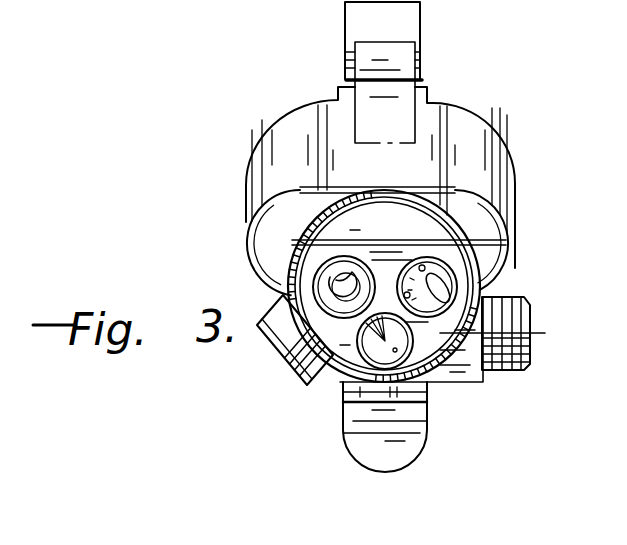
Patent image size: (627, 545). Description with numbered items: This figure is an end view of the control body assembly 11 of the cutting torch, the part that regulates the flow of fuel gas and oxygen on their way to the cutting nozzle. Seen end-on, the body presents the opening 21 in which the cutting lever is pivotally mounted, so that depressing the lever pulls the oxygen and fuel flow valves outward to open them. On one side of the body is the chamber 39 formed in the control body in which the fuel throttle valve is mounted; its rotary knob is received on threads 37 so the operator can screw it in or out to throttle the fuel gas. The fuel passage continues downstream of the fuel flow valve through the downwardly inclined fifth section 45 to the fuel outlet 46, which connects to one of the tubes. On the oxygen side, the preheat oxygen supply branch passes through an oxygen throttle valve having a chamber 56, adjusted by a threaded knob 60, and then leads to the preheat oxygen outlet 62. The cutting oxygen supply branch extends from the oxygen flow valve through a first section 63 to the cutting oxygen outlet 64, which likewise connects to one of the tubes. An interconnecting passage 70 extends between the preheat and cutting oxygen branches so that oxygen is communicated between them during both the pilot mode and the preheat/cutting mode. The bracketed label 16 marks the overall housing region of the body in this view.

The control body assembly 11 is at (341, 398).
The housing 16 is at (537, 95).
The opening 21 is at (423, 28).
The threads 37 is at (512, 370).
The chamber 39 is at (535, 319).
The fifth section 45 is at (372, 313).
The fuel outlet 46 is at (292, 270).
The chamber 56 is at (268, 353).
The threaded knob 60 is at (312, 2).
The preheat oxygen outlet 62 is at (385, 342).
The first section 63 is at (421, 265).
The cutting oxygen outlet 64 is at (490, 271).
The interconnecting passage 70 is at (405, 292).